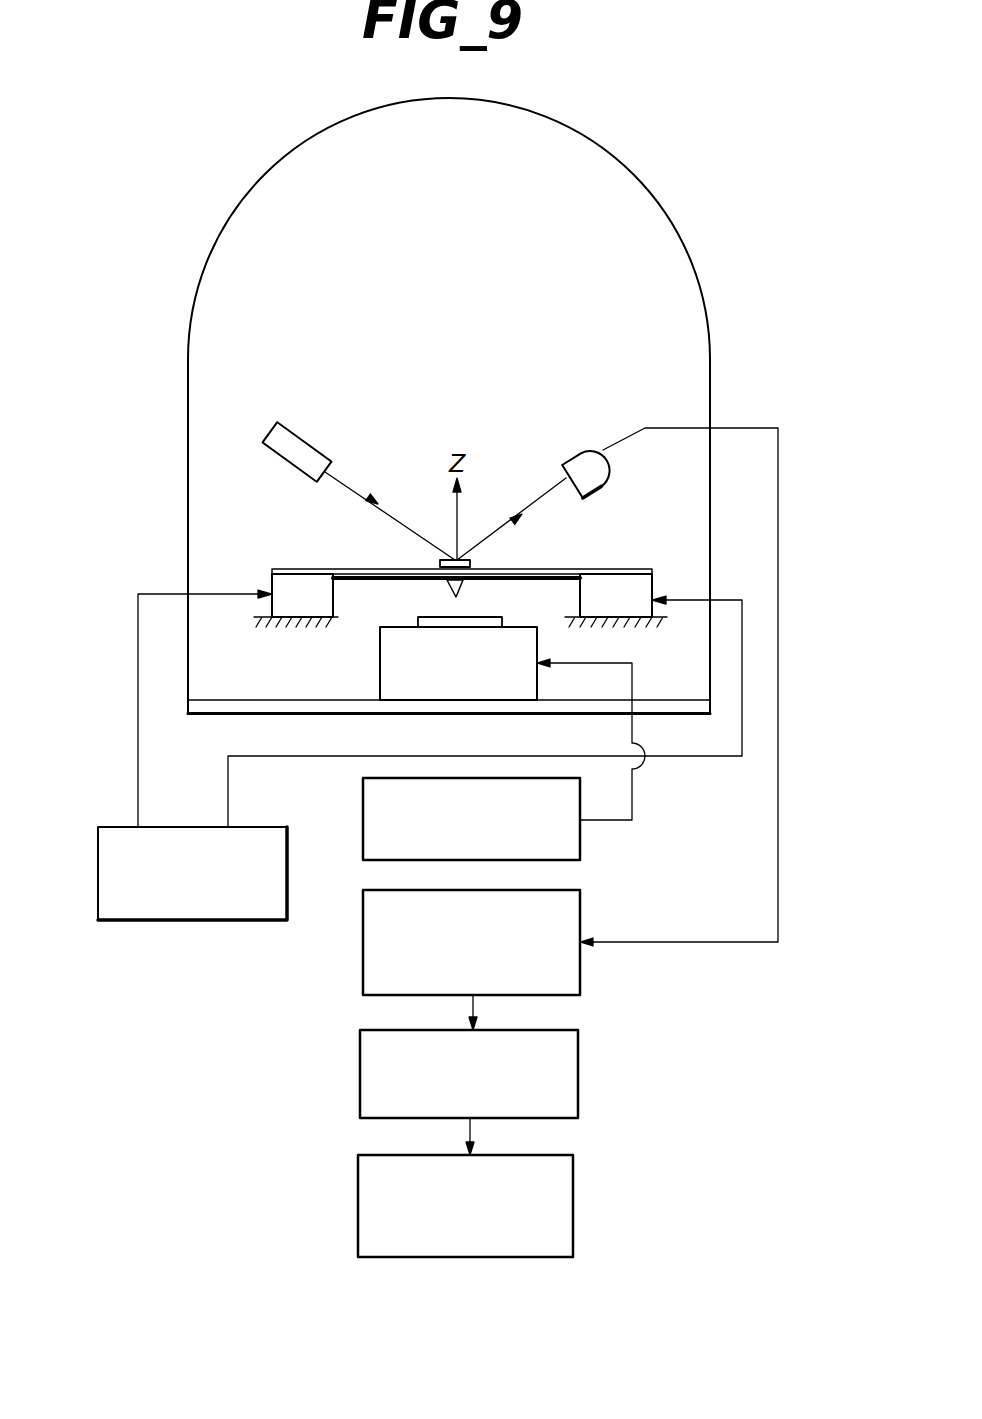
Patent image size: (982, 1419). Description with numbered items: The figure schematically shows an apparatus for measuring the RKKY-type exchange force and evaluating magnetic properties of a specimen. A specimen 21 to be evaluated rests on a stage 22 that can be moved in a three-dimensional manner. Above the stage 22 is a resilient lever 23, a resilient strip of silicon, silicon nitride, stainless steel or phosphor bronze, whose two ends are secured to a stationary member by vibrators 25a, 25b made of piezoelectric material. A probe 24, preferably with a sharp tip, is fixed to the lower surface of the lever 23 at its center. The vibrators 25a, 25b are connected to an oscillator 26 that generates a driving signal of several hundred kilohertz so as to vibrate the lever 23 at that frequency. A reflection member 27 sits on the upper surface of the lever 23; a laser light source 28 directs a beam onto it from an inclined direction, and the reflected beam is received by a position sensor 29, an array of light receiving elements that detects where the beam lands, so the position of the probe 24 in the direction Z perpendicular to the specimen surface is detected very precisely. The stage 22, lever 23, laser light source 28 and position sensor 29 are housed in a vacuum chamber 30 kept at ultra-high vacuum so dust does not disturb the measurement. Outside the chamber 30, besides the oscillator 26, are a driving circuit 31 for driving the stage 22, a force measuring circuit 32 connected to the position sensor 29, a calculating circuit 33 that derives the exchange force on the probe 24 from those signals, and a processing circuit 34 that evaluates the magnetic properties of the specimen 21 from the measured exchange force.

The specimen 21 is at (423, 613).
The stage 22 is at (380, 663).
The resilient lever 23 is at (347, 567).
The probe 24 is at (466, 582).
The vibrator 25a is at (293, 603).
The vibrator 25b is at (618, 592).
The oscillator 26 is at (203, 921).
The reflection member 27 is at (440, 562).
The laser light source 28 is at (300, 440).
The position sensor 29 is at (585, 452).
The vacuum chamber 30 is at (692, 262).
The driving circuit 31 is at (363, 805).
The force measuring circuit 32 is at (582, 972).
The calculating circuit 33 is at (578, 1073).
The processing circuit 34 is at (573, 1198).